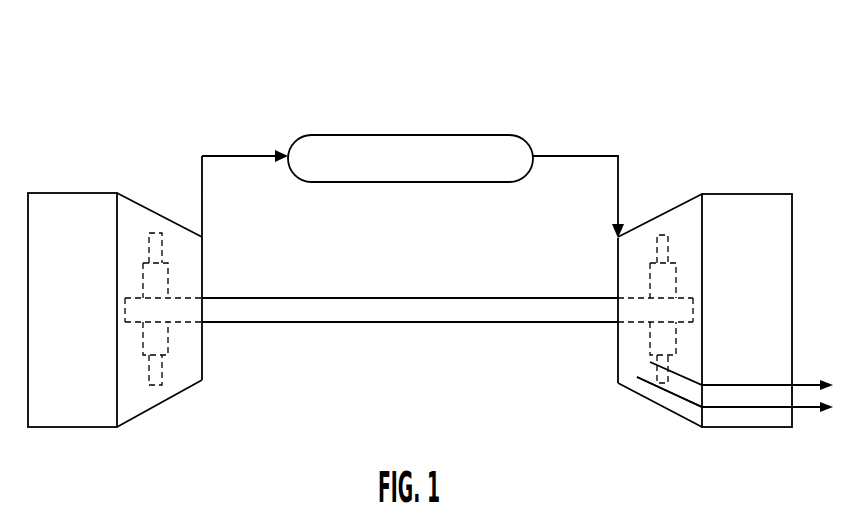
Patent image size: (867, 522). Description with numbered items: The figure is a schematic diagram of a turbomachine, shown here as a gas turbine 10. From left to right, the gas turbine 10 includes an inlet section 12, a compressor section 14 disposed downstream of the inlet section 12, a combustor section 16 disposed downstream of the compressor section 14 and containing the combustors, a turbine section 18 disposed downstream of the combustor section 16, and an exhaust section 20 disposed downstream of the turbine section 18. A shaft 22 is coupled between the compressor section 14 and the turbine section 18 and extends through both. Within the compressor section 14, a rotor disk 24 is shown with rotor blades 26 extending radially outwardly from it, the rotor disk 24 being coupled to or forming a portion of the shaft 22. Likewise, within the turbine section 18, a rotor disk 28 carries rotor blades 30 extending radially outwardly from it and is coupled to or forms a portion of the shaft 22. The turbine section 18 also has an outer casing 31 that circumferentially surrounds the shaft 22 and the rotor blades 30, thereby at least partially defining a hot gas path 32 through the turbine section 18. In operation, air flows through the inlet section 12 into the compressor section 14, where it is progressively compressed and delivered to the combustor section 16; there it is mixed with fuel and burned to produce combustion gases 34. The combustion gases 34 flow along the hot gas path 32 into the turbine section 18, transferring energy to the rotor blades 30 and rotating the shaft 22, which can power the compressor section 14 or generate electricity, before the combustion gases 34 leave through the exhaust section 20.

The gas turbine 10 is at (250, 93).
The inlet section 12 is at (48, 192).
The compressor section 14 is at (150, 207).
The combustor section 16 is at (467, 132).
The turbine section 18 is at (688, 197).
The exhaust section 20 is at (768, 192).
The shaft 22 is at (358, 322).
The rotor disk 24 is at (143, 283).
The rotor blade 26 is at (149, 243).
The rotor disk 28 is at (650, 273).
The rotor blade 30 is at (667, 233).
The outer casing 31 is at (682, 418).
The hot gas path 32 is at (656, 402).
The combustion gases 34 is at (565, 157).